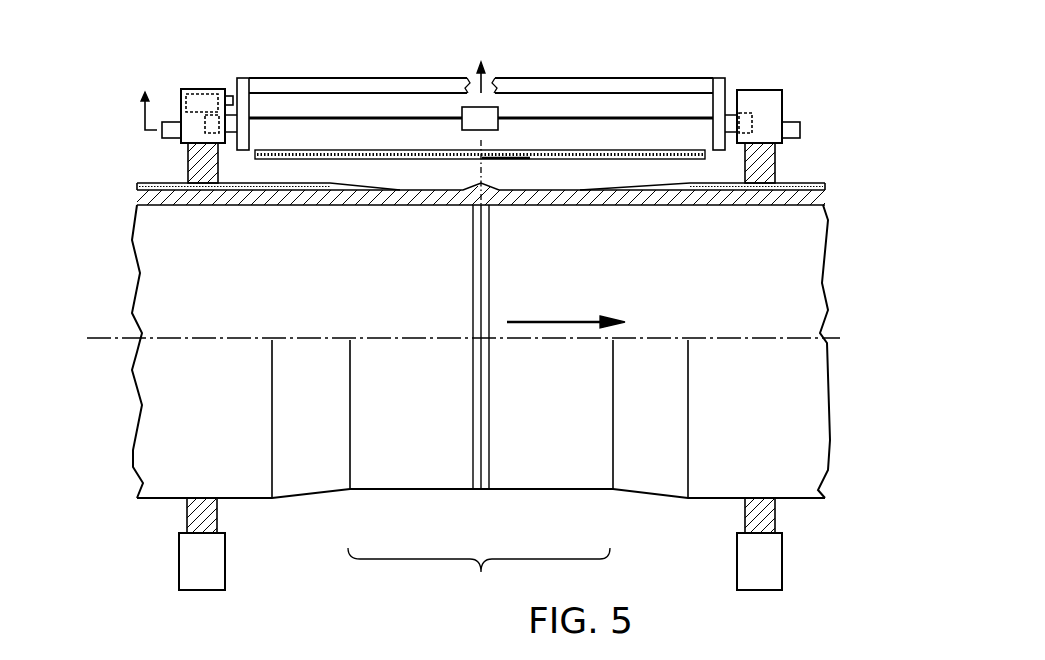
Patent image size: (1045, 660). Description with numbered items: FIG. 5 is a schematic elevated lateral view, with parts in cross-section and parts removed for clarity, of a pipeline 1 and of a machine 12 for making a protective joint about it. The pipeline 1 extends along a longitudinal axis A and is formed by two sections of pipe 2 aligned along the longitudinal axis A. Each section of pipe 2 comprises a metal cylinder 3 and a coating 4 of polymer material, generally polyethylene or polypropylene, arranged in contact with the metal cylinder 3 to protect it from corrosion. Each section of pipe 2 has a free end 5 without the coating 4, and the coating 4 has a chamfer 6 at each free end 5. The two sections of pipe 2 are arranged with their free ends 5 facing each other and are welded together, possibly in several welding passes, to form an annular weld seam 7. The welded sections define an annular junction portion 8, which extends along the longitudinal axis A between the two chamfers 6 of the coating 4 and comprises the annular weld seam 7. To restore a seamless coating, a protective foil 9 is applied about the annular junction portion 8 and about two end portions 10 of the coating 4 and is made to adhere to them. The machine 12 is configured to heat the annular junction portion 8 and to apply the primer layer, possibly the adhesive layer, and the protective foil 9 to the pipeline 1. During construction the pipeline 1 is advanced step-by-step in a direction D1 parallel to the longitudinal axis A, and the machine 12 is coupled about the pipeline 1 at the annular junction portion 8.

The pipeline 1 is at (889, 192).
The section of pipe 2 is at (118, 151).
The metal cylinder 3 is at (230, 206).
The coating 4 is at (137, 186).
The free end 5 is at (391, 189).
The chamfer 6 is at (293, 502).
The annular weld seam 7 is at (481, 490).
The annular junction portion 8 is at (497, 587).
The protective foil 9 is at (590, 160).
The end portion of the coating 10 is at (251, 502).
The machine 12 is at (723, 60).
The longitudinal axis A is at (100, 340).
The direction D1 is at (560, 318).